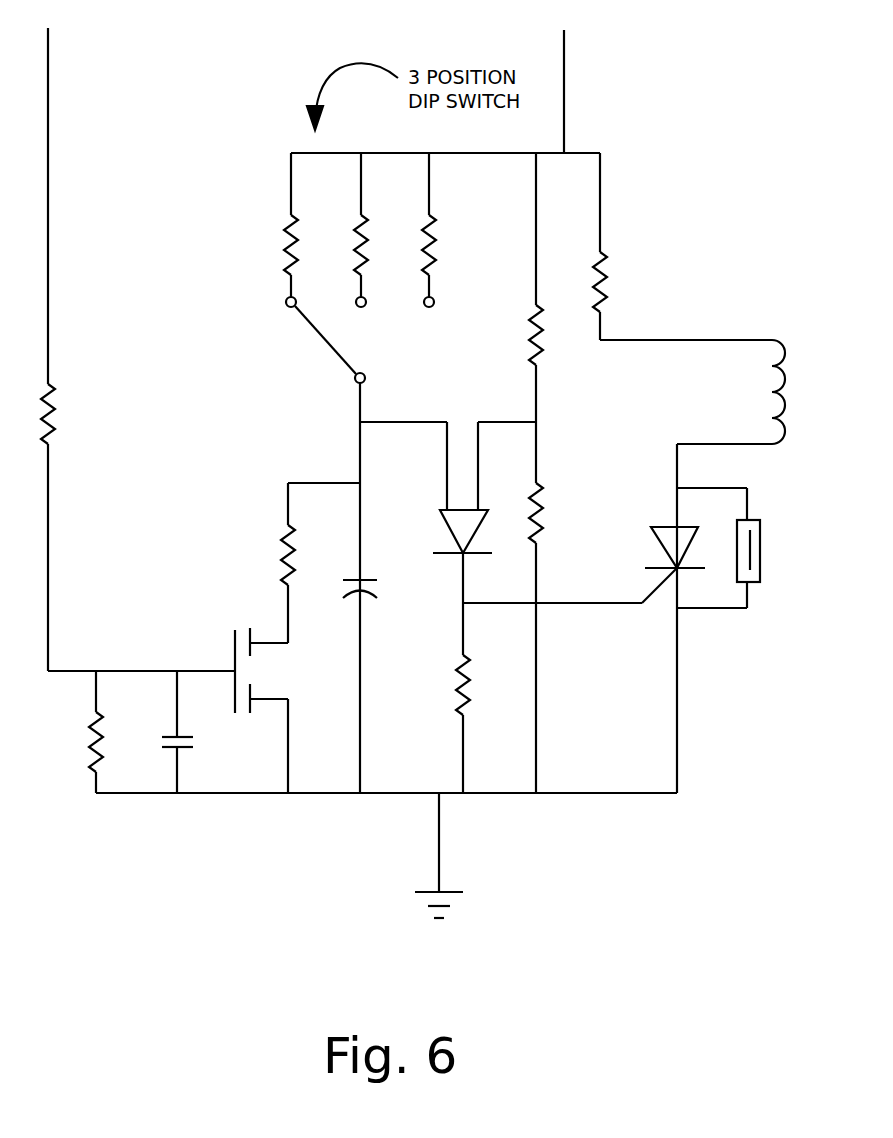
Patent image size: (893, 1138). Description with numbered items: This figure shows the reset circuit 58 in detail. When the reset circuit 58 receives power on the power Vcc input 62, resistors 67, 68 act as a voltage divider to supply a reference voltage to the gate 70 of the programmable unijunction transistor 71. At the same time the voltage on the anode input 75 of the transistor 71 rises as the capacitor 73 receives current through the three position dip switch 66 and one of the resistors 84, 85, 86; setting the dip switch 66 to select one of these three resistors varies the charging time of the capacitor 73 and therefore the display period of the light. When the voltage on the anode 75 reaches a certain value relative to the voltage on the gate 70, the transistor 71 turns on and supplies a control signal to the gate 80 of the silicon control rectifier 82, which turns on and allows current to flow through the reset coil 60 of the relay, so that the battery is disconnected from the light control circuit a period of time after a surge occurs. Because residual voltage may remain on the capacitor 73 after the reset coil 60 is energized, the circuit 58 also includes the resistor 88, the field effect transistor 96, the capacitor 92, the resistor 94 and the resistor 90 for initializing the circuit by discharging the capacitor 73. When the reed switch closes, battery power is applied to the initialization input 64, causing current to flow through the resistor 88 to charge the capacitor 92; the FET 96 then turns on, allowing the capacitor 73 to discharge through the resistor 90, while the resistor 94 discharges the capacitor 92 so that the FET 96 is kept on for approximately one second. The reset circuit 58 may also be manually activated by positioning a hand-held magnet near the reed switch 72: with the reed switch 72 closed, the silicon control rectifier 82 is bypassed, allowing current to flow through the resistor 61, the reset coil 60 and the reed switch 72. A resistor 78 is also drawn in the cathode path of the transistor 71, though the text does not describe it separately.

The reset circuit 58 is at (303, 855).
The reset coil 60 is at (772, 395).
The resistor 61 is at (600, 252).
The power Vcc input 62 is at (559, 79).
The initialization input 64 is at (38, 194).
The 3 position dip switch 66 is at (322, 348).
The resistor 67 is at (540, 362).
The resistor 68 is at (545, 515).
The gate 70 is at (478, 507).
The programmable unijunction transistor 71 is at (463, 582).
The reed switch 72 is at (761, 540).
The capacitor 73 is at (355, 578).
The anode input 75 is at (452, 505).
The resistor R11 78 is at (468, 700).
The gate 80 is at (665, 595).
The silicon control rectifier 82 is at (652, 534).
The resistor 84 is at (286, 220).
The resistor 85 is at (362, 222).
The resistor 86 is at (432, 272).
The resistor 88 is at (48, 385).
The resistor 90 is at (285, 530).
The capacitor 92 is at (164, 735).
The resistor 94 is at (96, 715).
The field effect transistor 96 is at (234, 638).